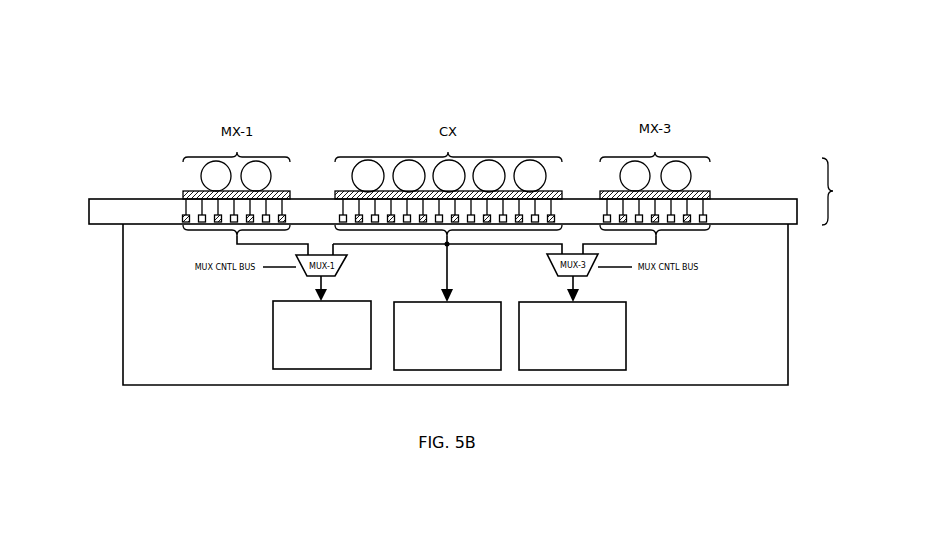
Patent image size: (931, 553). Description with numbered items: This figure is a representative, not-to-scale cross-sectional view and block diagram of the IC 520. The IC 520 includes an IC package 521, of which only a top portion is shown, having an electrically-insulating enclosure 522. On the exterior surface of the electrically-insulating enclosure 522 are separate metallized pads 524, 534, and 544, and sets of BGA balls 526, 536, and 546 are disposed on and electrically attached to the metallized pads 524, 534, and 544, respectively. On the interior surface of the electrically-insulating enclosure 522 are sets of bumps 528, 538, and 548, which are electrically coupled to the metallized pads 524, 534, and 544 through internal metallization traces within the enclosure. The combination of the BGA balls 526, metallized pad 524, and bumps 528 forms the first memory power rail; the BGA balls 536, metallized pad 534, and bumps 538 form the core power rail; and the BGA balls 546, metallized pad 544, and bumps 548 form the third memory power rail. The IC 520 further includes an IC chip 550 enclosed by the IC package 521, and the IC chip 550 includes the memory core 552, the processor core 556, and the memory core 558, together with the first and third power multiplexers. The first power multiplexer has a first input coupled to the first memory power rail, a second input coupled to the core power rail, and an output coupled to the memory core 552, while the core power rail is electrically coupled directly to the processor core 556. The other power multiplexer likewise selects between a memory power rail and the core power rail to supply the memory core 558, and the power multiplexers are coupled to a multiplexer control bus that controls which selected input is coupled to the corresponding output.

The IC 520 is at (486, 66).
The IC package 521 is at (847, 191).
The electrically-insulating enclosure 522 is at (106, 198).
The metallized pad 524 is at (183, 196).
The BGA balls 526 is at (217, 173).
The bumps 528 is at (182, 219).
The metallized pad 534 is at (348, 190).
The BGA balls 536 is at (408, 173).
The bumps 538 is at (556, 220).
The metallized pad 544 is at (705, 190).
The BGA balls 546 is at (635, 173).
The bumps 548 is at (706, 220).
The IC chip 550 is at (121, 329).
The memory core 552 is at (322, 335).
The processor core 556 is at (447, 336).
The memory core 558 is at (572, 336).